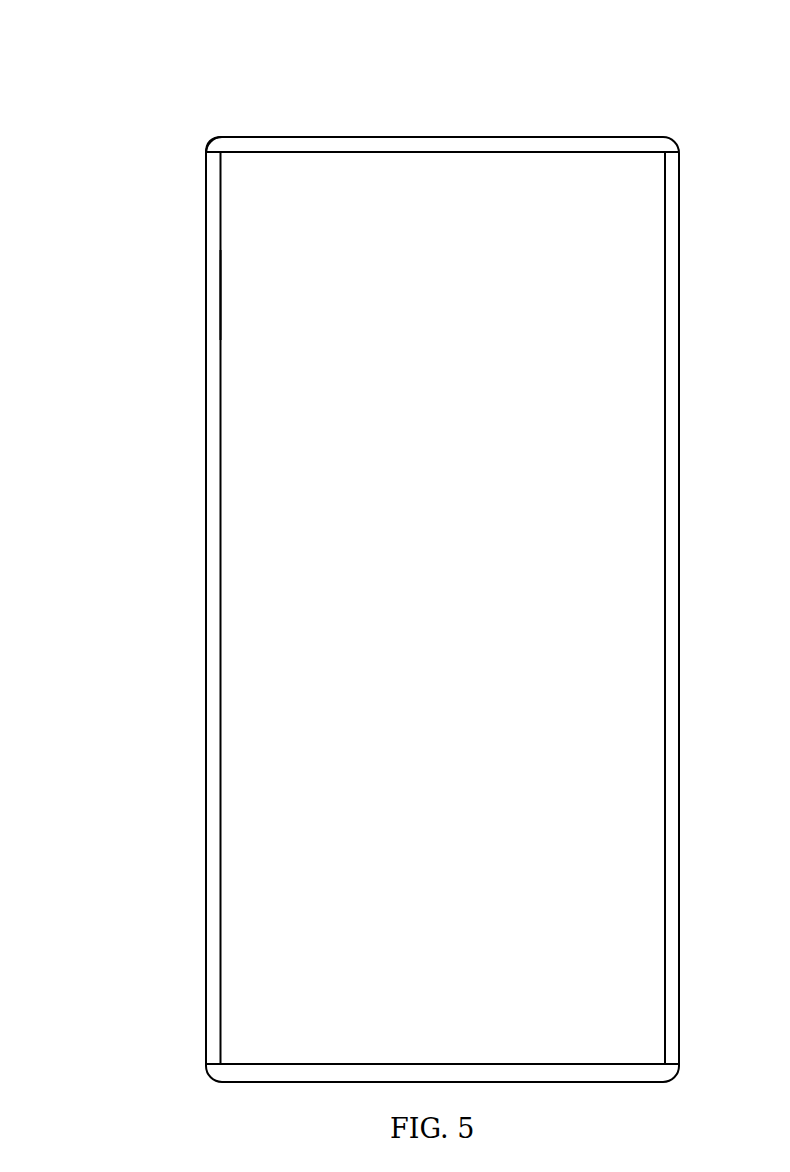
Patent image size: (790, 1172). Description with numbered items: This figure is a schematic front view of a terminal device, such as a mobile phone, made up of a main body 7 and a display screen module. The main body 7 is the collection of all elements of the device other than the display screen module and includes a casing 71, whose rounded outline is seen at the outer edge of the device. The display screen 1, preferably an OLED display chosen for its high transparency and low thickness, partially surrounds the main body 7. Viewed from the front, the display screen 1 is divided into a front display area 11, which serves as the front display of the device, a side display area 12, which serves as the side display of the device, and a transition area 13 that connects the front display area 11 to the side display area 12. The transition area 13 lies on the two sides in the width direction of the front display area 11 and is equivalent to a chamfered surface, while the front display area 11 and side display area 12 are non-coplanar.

The main body 7 is at (412, 128).
The casing 71 is at (223, 148).
The display screen 1 is at (105, 243).
The front display area 11 is at (242, 332).
The transition area 13 is at (213, 420).
The side display area 12 is at (207, 532).